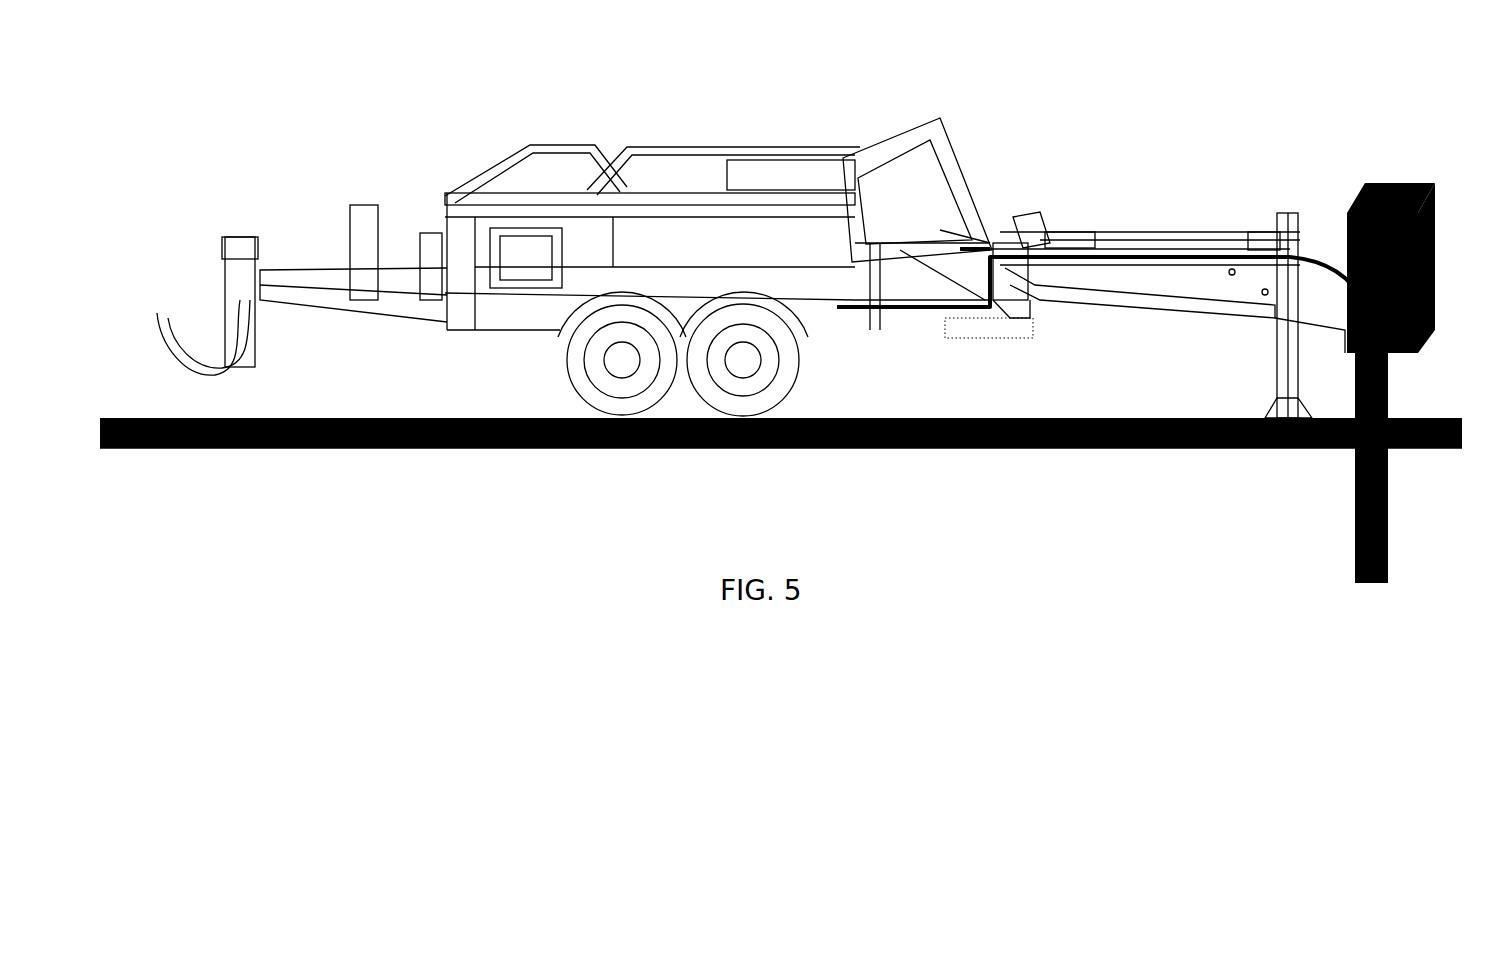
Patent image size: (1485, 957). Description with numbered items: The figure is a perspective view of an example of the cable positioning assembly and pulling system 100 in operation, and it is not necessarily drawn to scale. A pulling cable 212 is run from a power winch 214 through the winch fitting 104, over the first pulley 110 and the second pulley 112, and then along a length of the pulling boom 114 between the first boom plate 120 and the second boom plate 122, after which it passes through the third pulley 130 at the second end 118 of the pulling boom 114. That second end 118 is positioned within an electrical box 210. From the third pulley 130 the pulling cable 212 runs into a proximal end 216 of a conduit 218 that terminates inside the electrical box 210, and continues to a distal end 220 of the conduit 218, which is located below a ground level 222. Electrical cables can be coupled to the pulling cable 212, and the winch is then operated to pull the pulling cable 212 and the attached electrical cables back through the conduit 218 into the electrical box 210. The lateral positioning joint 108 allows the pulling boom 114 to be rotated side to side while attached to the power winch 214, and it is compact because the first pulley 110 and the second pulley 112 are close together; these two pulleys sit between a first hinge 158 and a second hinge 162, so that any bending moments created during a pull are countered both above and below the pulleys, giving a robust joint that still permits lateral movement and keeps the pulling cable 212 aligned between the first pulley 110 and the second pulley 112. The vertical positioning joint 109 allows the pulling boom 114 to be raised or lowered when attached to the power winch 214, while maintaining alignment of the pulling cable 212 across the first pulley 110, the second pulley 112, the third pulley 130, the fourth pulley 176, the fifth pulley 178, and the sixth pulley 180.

The cable positioning assembly and pulling system 100 is at (1050, 67).
The winch fitting 104 is at (855, 310).
The lateral positioning joint 108 is at (988, 335).
The vertical positioning joint 109 is at (1027, 212).
The first pulley 110 is at (1007, 297).
The second pulley 112 is at (990, 243).
The pulling boom 114 is at (1113, 282).
The second end 118 is at (1372, 183).
The first boom plate 120 is at (1200, 227).
The second boom plate 122 is at (1183, 245).
The third pulley 130 is at (1347, 338).
The first hinge 158 is at (985, 240).
The second hinge 162 is at (985, 318).
The fourth pulley 176 is at (1333, 247).
The fifth pulley 178 is at (1290, 220).
The sixth pulley 180 is at (1257, 233).
The electrical box 210 is at (1408, 183).
The pulling cable 212 is at (850, 300).
The power winch 214 is at (568, 185).
The proximal end 216 is at (1388, 355).
The conduit 218 is at (1310, 449).
The distal end 220 is at (1355, 572).
The ground level 222 is at (930, 450).